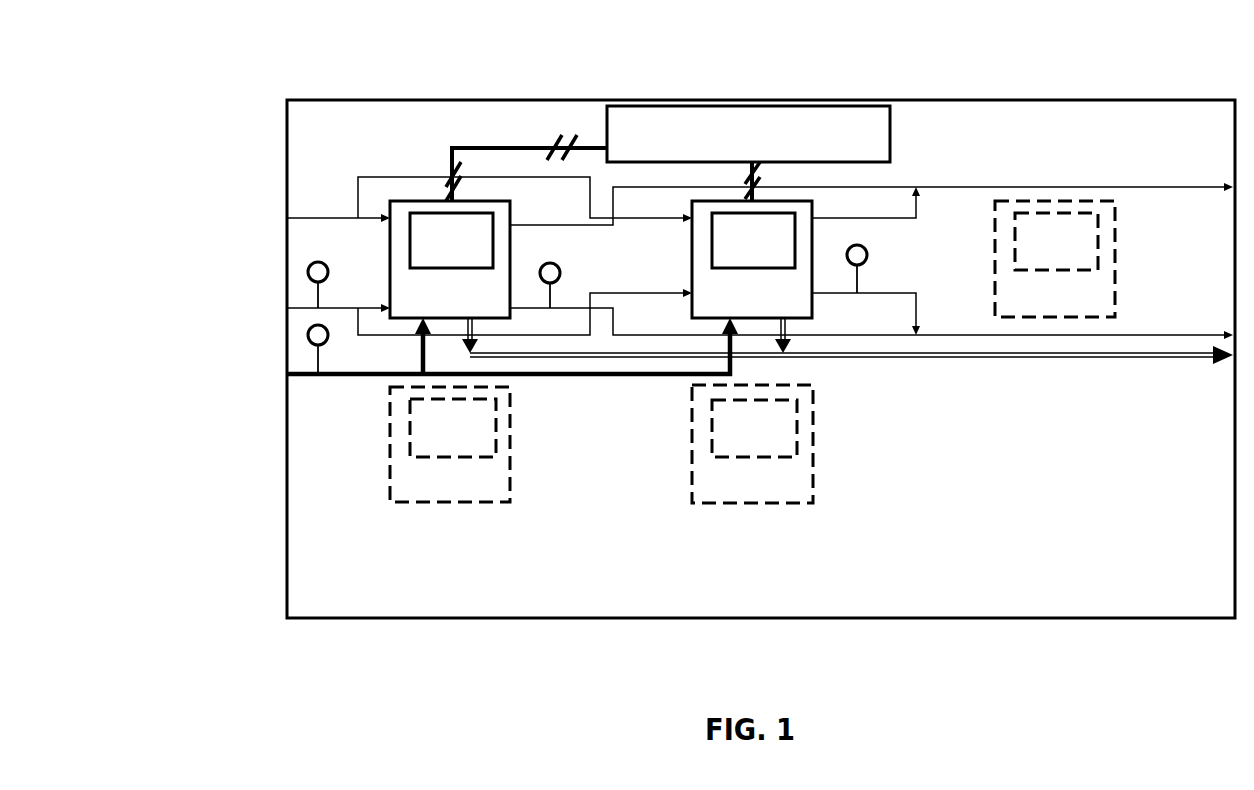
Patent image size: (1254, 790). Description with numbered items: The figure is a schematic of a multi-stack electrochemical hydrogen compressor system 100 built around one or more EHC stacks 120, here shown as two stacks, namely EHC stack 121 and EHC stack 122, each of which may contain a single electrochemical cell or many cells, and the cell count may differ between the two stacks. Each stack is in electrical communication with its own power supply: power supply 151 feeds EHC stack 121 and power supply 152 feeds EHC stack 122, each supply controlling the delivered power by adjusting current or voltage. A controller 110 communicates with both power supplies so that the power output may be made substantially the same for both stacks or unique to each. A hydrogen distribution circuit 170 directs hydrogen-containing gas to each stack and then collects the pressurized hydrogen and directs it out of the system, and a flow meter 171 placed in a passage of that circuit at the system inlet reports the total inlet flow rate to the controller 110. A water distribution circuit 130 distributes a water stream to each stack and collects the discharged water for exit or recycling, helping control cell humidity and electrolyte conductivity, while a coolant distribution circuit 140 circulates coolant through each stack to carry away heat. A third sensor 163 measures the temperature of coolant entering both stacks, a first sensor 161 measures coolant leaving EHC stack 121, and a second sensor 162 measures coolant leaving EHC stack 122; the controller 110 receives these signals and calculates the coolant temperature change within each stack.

The multi-stack electrochemical hydrogen compressor system 100 is at (922, 100).
The controller 110 is at (728, 145).
The EHC stacks 120 is at (392, 518).
The EHC stack 121 is at (430, 301).
The EHC stack 122 is at (732, 301).
The water distribution circuit 130 is at (370, 176).
The coolant distribution circuit 140 is at (390, 336).
The power supply 151 is at (432, 254).
The power supply 152 is at (733, 254).
The first sensor 161 is at (560, 272).
The second sensor 162 is at (867, 257).
The third sensor 163 is at (308, 272).
The hydrogen distribution circuit 170 is at (302, 376).
The flow meter 171 is at (309, 343).